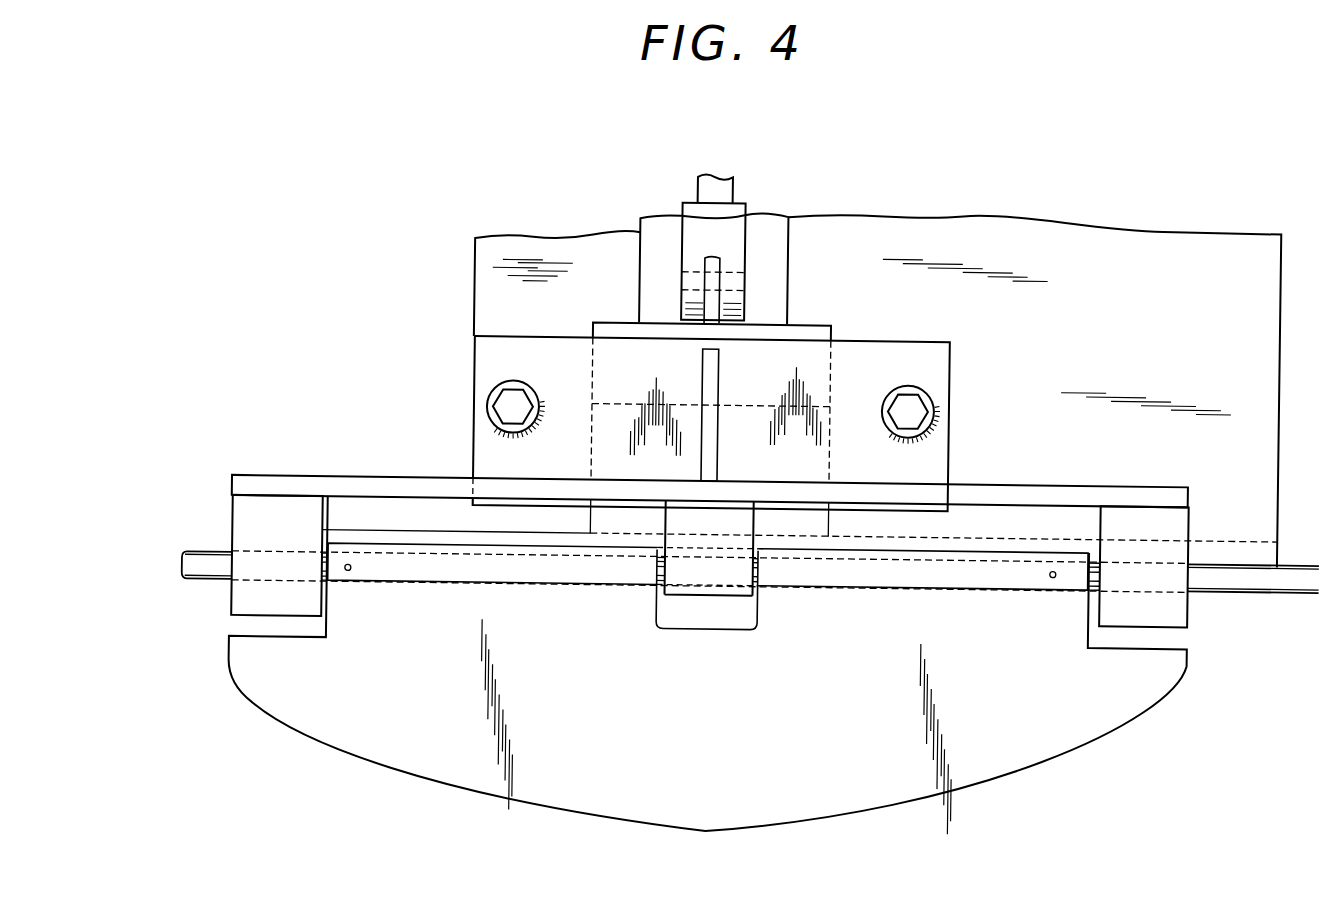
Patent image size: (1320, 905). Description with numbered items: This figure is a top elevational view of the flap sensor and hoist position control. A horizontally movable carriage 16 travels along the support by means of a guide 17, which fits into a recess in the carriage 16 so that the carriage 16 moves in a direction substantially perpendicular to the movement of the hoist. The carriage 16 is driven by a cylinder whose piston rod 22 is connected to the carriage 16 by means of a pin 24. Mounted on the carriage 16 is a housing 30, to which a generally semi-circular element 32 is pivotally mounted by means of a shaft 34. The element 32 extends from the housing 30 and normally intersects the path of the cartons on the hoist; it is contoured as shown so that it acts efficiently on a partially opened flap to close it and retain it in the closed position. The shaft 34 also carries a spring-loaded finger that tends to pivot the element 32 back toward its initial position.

The carriage 16 is at (834, 328).
The guide 17 is at (783, 260).
The piston rod 22 is at (722, 186).
The pin 24 is at (682, 277).
The housing 30 is at (952, 377).
The semi-circular element 32 is at (690, 725).
The shaft 34 is at (203, 556).